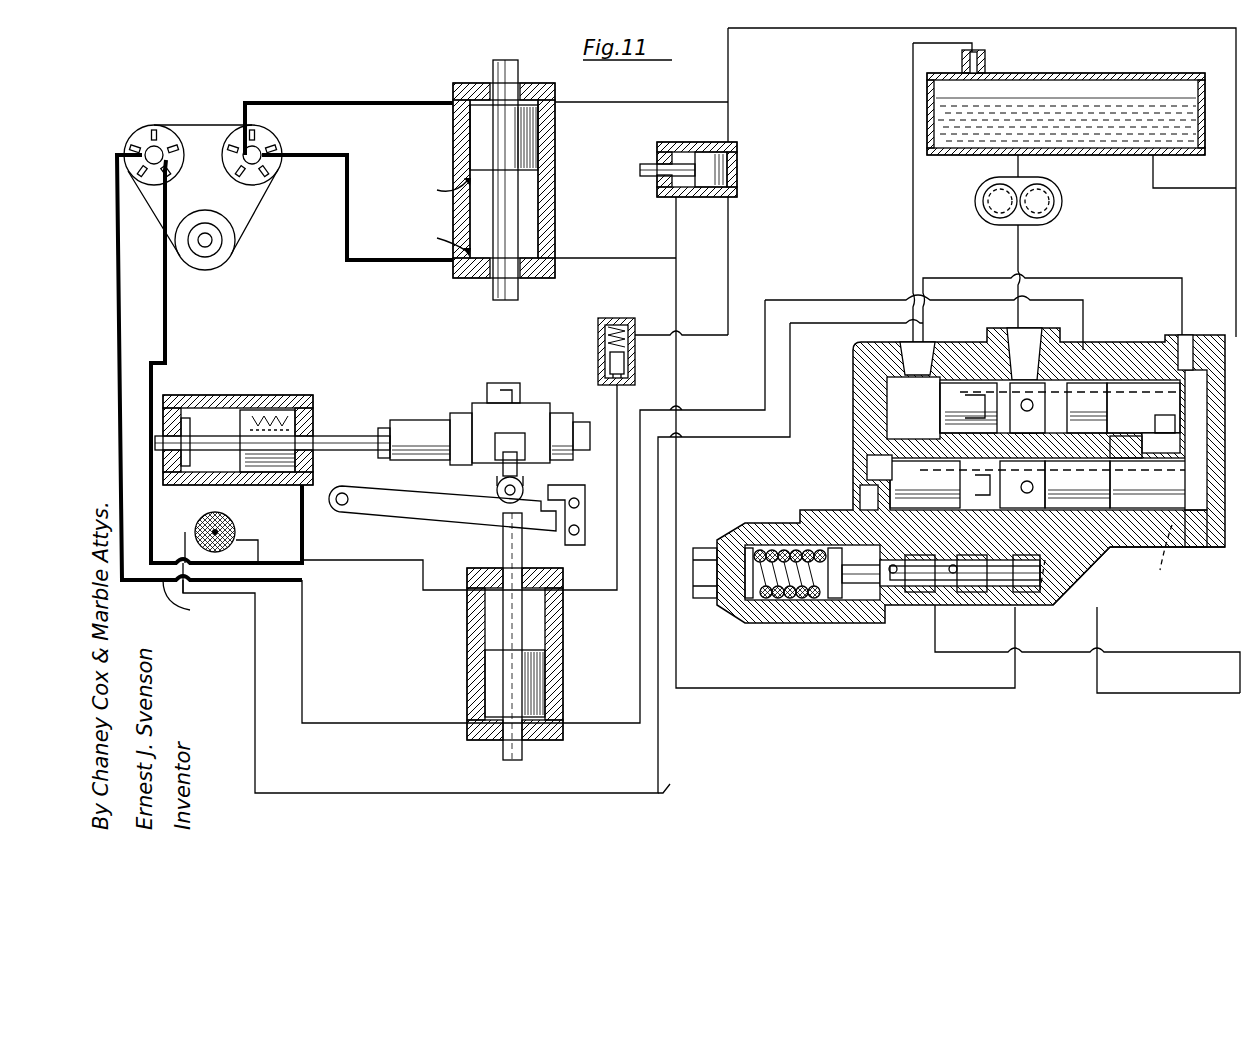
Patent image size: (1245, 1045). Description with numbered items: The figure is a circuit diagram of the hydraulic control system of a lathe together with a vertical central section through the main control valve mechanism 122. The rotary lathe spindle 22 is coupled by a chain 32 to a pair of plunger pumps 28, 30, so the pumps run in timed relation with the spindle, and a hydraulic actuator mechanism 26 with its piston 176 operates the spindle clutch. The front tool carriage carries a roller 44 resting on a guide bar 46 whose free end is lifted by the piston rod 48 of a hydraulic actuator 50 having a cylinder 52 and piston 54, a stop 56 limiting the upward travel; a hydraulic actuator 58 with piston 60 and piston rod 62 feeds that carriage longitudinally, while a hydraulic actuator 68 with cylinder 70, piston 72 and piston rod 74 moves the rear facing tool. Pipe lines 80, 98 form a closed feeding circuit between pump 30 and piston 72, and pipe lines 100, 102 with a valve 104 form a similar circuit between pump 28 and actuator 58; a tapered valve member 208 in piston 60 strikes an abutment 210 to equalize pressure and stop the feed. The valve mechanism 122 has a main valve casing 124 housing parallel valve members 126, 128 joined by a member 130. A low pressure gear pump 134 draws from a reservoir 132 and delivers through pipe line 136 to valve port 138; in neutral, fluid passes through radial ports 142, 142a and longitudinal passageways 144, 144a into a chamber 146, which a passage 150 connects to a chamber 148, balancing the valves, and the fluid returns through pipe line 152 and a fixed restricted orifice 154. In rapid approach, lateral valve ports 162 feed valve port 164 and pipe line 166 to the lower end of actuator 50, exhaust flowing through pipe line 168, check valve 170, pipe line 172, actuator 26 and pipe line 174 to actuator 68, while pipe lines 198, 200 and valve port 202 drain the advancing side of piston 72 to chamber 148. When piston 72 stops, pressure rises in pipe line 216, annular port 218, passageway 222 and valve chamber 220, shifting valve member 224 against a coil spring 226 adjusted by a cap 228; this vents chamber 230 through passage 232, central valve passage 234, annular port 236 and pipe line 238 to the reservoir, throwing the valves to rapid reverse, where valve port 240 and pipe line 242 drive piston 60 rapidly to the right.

The rotary lathe spindle 22 is at (212, 252).
The hydraulic actuator mechanism 26 is at (716, 153).
The plunger pump 28 is at (149, 126).
The plunger pump 30 is at (282, 133).
The chain 32 is at (262, 208).
The roller 44 is at (497, 490).
The guide bar 46 is at (412, 510).
The piston rod 48 is at (522, 548).
The hydraulic actuator 50 is at (504, 654).
The cylinder 52 is at (563, 653).
The piston 54 is at (500, 681).
The stop 56 is at (561, 490).
The hydraulic actuator 58 is at (272, 405).
The piston 60 is at (290, 432).
The piston rod 62 is at (354, 436).
The hydraulic actuator 68 is at (496, 180).
The cylinder 70 is at (555, 181).
The piston 72 is at (522, 128).
The piston rod 74 is at (512, 211).
The pipe line 80 is at (348, 215).
The pipe line 98 is at (360, 101).
The pipe line 100 is at (197, 605).
The pipe line 102 is at (246, 546).
The valve 104 is at (226, 518).
The valve mechanism 122 is at (966, 483).
The main valve casing 124 is at (1095, 612).
The valve member 126 is at (1150, 365).
The valve member 128 is at (1140, 555).
The member 130 is at (1128, 380).
The reservoir 132 is at (1093, 155).
The low pressure gear pump 134 is at (1062, 208).
The pipe line 136 is at (1020, 244).
The valve port 138 is at (1025, 375).
The radial ports 142 is at (1020, 403).
The radial ports 142a is at (1020, 485).
The longitudinal passageway 144 is at (1185, 332).
The longitudinal passageway 144a is at (1225, 590).
The chamber 146 is at (1196, 370).
The chamber 148 is at (913, 408).
The passage 150 is at (1118, 275).
The pipe line 152 is at (912, 197).
The fixed restricted orifice 154 is at (985, 56).
The lateral valve ports 162 is at (1070, 380).
The valve port 164 is at (1118, 372).
The pipe line 166 is at (845, 300).
The pipe line 168 is at (617, 412).
The check valve 170 is at (598, 345).
The pipe line 172 is at (730, 252).
The pipe line 174 is at (618, 102).
The piston 176 is at (720, 166).
The pipe line 198 is at (613, 252).
The pipe line 200 is at (765, 688).
The valve port 202 is at (920, 592).
The tapered valve member 208 is at (248, 412).
The abutment 210 is at (186, 420).
The pipe line 216 is at (848, 28).
The annular port 218 is at (1100, 585).
The valve chamber 220 is at (1033, 612).
The passageway 222 is at (1055, 592).
The valve member 224 is at (995, 595).
The coil spring 226 is at (812, 600).
The cap 228 is at (738, 610).
The chamber 230 is at (866, 460).
The passage 232 is at (860, 502).
The central valve passage 234 is at (870, 605).
The annular port 236 is at (940, 592).
The pipe line 238 is at (990, 655).
The valve port 240 is at (968, 352).
The pipe line 242 is at (690, 779).